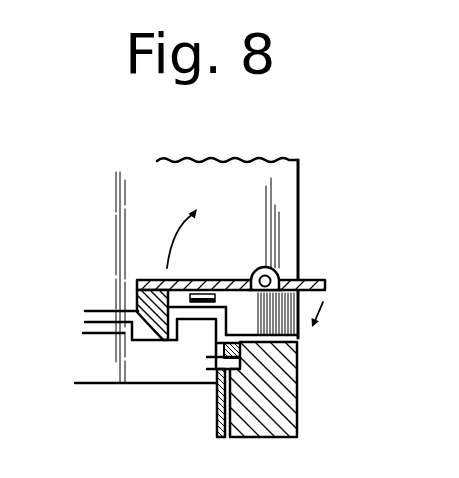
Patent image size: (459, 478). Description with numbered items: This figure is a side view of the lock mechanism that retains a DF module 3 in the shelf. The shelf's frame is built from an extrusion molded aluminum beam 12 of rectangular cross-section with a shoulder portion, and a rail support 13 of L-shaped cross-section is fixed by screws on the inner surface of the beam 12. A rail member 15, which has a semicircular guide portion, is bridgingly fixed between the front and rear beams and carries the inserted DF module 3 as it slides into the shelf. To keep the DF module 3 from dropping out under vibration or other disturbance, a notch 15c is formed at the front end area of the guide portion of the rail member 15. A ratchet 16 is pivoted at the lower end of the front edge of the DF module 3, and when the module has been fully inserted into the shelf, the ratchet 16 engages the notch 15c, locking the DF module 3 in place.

The DF module 3 is at (299, 219).
The beam 12 is at (292, 413).
The rail support 13 is at (217, 423).
The rail member 15 is at (100, 376).
The notch 15c is at (150, 341).
The ratchet 16 is at (137, 284).